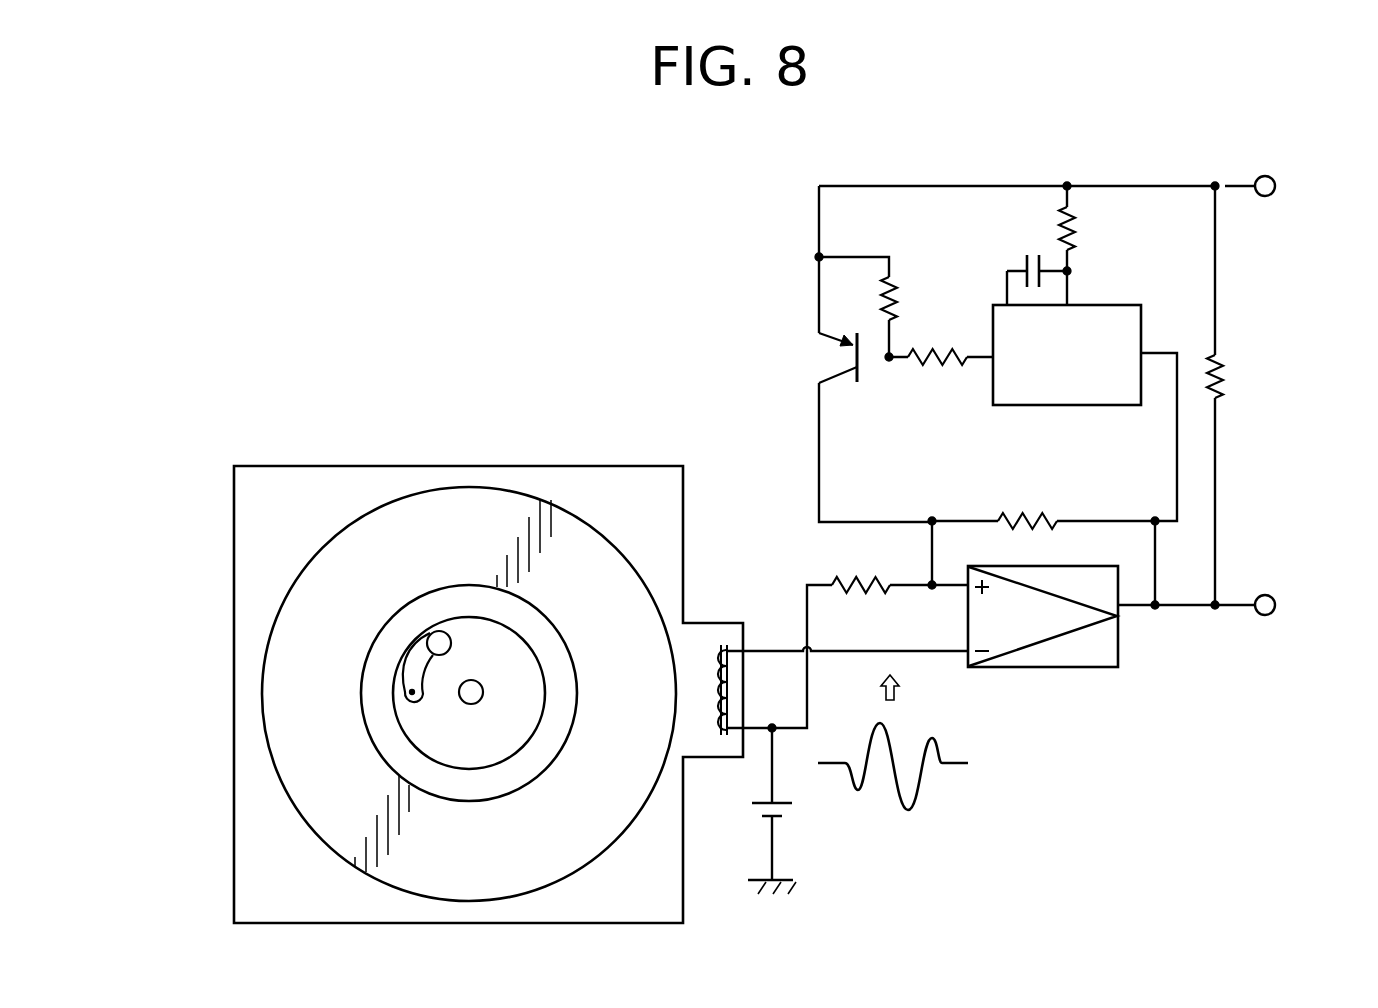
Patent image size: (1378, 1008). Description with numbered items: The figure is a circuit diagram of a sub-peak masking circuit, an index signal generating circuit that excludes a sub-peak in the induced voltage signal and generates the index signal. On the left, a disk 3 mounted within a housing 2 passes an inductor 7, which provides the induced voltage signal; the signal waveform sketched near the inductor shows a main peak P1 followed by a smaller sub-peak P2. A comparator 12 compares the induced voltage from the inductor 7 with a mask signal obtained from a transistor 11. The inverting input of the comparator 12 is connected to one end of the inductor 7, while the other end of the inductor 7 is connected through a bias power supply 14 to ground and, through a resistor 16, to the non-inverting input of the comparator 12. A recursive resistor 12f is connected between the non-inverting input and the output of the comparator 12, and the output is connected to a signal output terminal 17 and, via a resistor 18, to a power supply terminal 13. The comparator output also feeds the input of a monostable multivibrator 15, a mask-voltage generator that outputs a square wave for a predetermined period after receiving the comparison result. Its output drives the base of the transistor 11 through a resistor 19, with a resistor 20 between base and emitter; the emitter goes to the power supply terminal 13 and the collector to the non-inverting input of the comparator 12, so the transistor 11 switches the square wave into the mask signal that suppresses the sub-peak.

The housing 2 is at (630, 492).
The rotating disk 3 is at (435, 528).
The inductor 7 is at (712, 652).
The transistor 11 is at (843, 362).
The comparator 12 is at (1090, 658).
The recursive resistor 12f is at (1020, 512).
The power supply terminal 13 is at (1276, 186).
The bias power supply 14 is at (790, 810).
The monostable multivibrator 15 is at (1108, 305).
The resistor 16 is at (850, 578).
The signal output terminal 17 is at (1276, 605).
The resistor 18 is at (1225, 376).
The resistor 19 is at (940, 373).
The resistor 20 is at (905, 297).
The first pulse P1 is at (872, 722).
The second pulse P2 is at (932, 738).